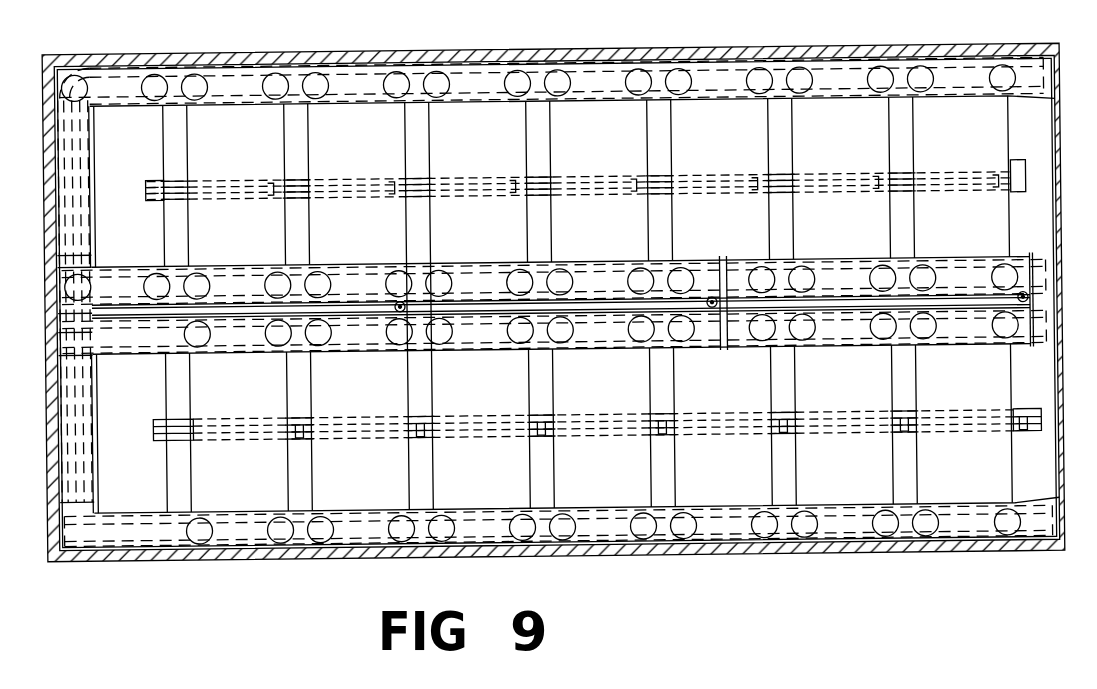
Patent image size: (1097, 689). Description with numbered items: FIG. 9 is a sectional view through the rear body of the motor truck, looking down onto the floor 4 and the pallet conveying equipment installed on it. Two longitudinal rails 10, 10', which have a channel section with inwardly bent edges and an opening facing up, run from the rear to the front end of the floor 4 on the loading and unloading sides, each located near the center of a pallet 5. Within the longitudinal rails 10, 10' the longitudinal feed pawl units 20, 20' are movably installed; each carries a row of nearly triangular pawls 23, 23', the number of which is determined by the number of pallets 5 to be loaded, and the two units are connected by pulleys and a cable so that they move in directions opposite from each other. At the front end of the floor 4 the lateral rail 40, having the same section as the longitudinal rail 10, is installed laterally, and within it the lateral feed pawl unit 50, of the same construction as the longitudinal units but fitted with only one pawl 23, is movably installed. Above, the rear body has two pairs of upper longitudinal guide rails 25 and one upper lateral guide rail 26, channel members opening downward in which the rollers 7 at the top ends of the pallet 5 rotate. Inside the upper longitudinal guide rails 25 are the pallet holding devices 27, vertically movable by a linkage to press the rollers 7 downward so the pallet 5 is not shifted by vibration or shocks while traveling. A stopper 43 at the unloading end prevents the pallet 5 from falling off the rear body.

The floor 4 is at (1053, 159).
The pallet 5 is at (164, 155).
The rollers 7 is at (808, 66).
The longitudinal rail 10 is at (577, 413).
The longitudinal rail 10' is at (578, 166).
The longitudinal feed pawl unit 20 is at (597, 407).
The longitudinal feed pawl unit 20' is at (578, 163).
The pawl 23 is at (517, 337).
The pawl 23' is at (562, 186).
The upper longitudinal guide rail 25 is at (567, 101).
The upper lateral guide rail 26 is at (95, 427).
The pallet holding device 27 is at (117, 95).
The lateral rail 40 is at (86, 253).
The stopper 43 is at (1019, 197).
The lateral feed pawl unit 50 is at (75, 195).